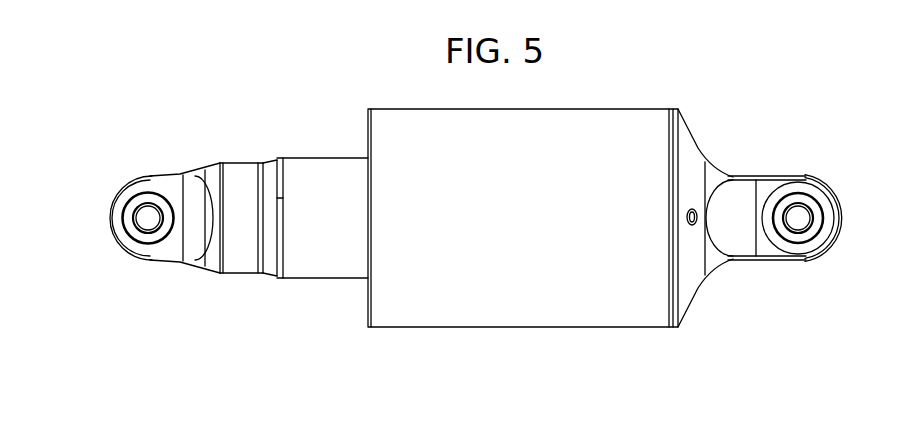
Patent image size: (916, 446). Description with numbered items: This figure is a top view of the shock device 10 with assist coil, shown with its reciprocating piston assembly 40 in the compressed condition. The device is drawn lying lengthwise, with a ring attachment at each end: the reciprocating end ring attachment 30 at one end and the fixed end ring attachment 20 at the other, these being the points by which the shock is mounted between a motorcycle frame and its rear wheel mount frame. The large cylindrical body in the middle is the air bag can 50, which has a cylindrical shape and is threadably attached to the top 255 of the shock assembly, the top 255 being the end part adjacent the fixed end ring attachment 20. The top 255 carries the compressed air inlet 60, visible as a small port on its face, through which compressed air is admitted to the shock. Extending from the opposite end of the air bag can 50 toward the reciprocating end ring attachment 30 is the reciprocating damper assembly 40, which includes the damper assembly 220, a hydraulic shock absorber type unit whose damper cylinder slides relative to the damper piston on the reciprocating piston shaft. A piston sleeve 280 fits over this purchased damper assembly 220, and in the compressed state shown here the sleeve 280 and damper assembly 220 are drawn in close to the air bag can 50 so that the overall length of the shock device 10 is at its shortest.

The shock device with assist coil 10 is at (750, 81).
The fixed end ring attachment 20 is at (828, 200).
The reciprocating end ring attachment 30 is at (103, 255).
The reciprocating damper assembly 40 is at (271, 101).
The air bag can 50 is at (523, 194).
The compressed air inlet 60 is at (742, 273).
The damper assembly 220 is at (196, 141).
The top of shock assembly 255 is at (786, 240).
The piston sleeve 280 is at (295, 257).